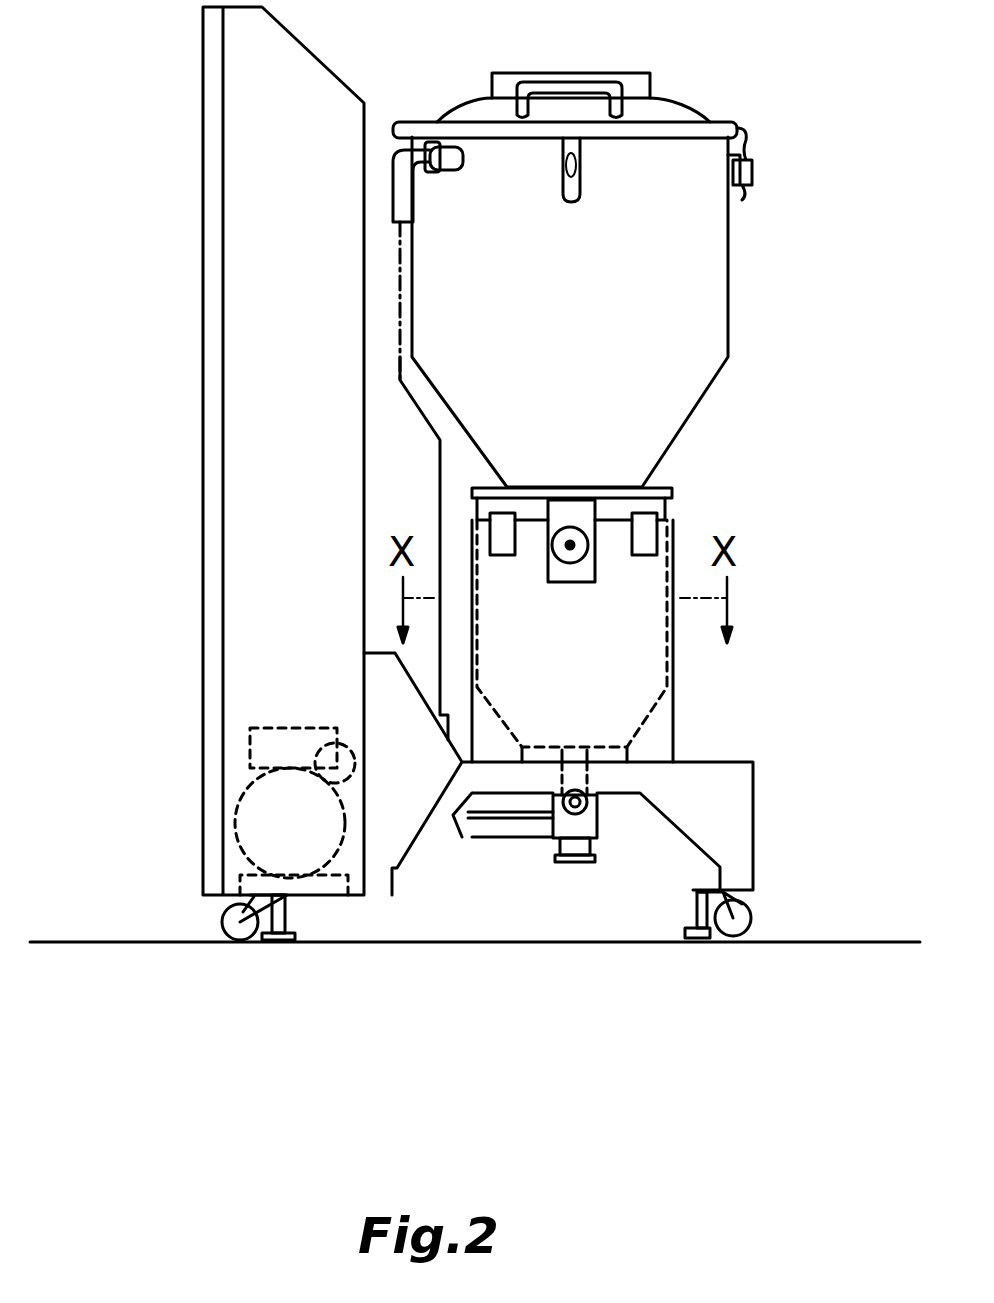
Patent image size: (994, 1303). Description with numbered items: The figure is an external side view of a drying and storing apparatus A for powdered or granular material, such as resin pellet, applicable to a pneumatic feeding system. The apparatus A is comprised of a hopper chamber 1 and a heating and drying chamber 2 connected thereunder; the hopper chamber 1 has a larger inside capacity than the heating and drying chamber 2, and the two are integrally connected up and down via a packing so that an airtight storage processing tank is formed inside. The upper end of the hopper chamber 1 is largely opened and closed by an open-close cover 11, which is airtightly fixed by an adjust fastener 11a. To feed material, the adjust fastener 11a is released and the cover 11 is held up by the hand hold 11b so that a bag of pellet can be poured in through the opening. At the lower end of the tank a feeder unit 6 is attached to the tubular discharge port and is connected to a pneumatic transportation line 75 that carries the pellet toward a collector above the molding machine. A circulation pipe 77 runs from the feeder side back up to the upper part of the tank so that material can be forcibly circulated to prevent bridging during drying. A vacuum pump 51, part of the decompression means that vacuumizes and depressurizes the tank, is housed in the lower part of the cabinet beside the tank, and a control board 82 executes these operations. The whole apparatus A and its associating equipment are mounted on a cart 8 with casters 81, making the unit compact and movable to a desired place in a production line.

The hopper chamber 1 is at (731, 277).
The heating and drying chamber 2 is at (682, 670).
The feeder unit 6 is at (606, 805).
The cart 8 is at (753, 787).
The open-close cover 11 is at (668, 97).
The adjust fastener 11a is at (752, 170).
The hand hold 11b is at (574, 88).
The vacuum pump 51 is at (232, 810).
The pneumatic transportation line 75 is at (453, 830).
The circulation pipe 77 is at (396, 318).
The casters 81 is at (753, 907).
The control board 82 is at (202, 388).
The drying and storing apparatus A is at (702, 437).